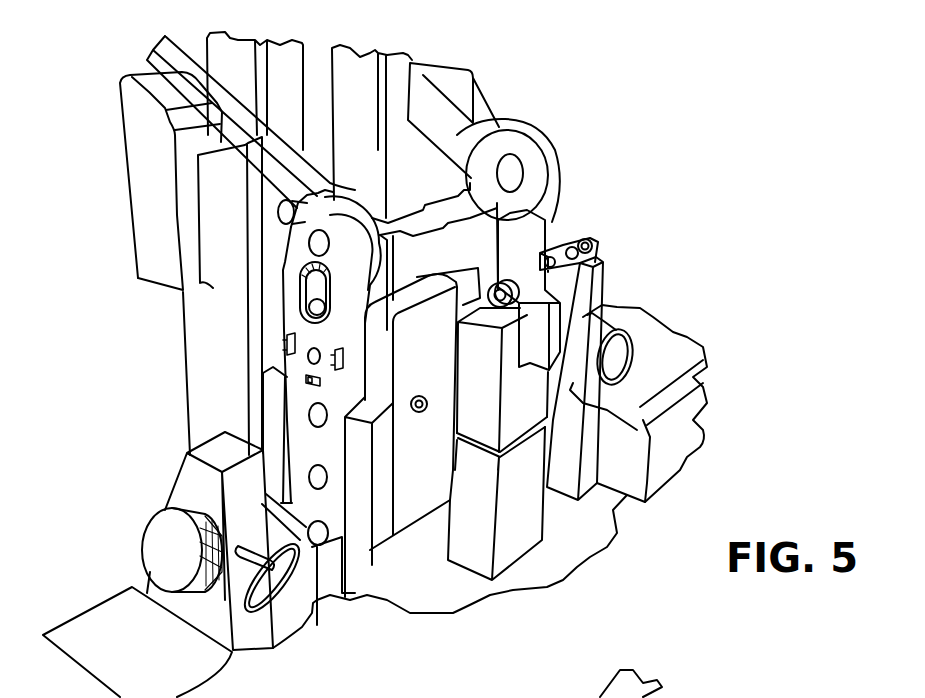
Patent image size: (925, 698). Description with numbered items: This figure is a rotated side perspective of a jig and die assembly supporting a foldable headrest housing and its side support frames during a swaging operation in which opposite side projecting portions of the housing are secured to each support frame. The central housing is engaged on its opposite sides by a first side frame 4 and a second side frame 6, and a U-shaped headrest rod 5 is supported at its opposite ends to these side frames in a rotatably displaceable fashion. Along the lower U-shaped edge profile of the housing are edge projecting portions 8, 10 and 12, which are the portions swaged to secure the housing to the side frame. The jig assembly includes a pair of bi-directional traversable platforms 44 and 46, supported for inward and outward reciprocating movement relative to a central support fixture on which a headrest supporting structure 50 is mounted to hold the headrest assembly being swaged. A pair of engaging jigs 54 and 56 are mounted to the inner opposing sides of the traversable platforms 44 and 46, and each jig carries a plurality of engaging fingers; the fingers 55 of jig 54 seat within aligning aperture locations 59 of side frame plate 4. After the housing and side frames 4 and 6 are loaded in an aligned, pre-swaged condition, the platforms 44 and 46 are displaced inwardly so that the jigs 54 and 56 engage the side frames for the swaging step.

The first side frame 4 is at (328, 220).
The headrest rod 5 is at (293, 170).
The second side frame 6 is at (502, 143).
The edge projecting portion 8 is at (333, 353).
The edge projecting portion 10 is at (283, 340).
The edge projecting portion 12 is at (305, 377).
The traversable platform 44 is at (160, 664).
The traversable platform 46 is at (667, 374).
The headrest supporting structure 50 is at (403, 507).
The engaging jig 54 is at (192, 485).
The engaging fingers 55 is at (313, 600).
The engaging jig 56 is at (602, 275).
The aligning aperture locations 59 is at (325, 427).